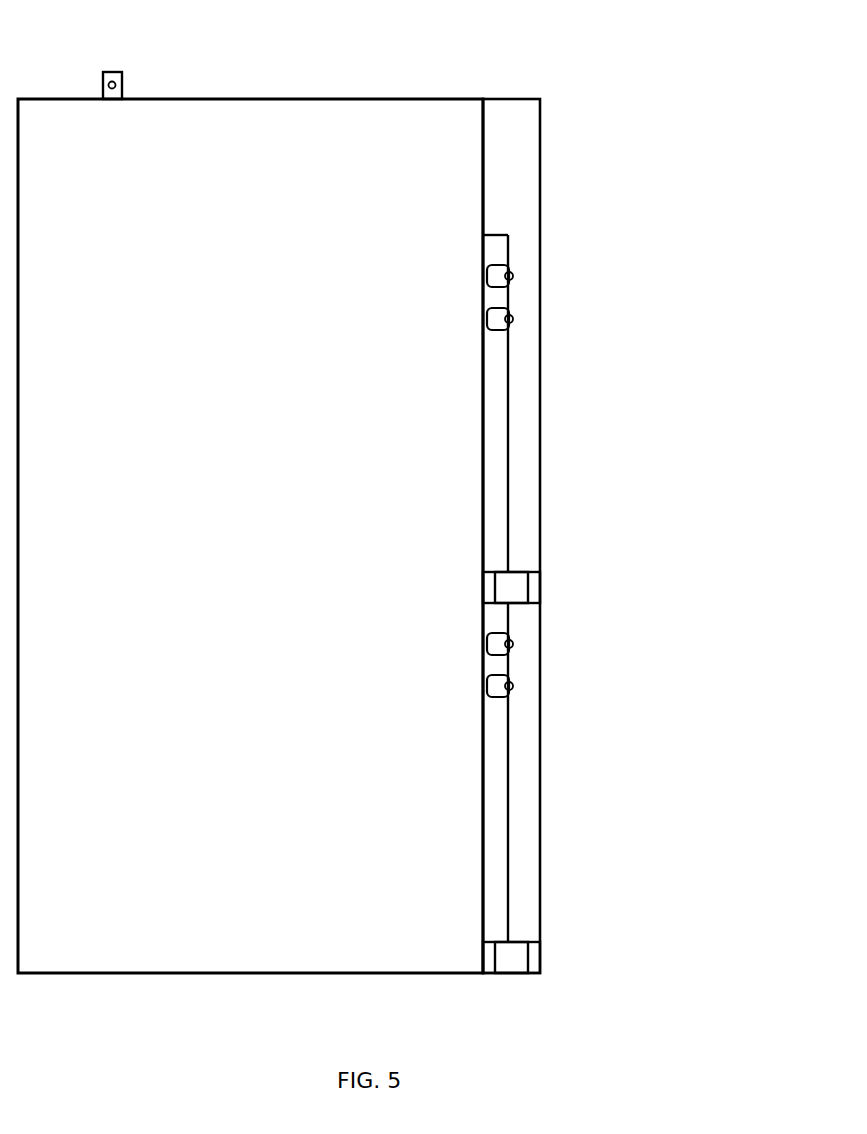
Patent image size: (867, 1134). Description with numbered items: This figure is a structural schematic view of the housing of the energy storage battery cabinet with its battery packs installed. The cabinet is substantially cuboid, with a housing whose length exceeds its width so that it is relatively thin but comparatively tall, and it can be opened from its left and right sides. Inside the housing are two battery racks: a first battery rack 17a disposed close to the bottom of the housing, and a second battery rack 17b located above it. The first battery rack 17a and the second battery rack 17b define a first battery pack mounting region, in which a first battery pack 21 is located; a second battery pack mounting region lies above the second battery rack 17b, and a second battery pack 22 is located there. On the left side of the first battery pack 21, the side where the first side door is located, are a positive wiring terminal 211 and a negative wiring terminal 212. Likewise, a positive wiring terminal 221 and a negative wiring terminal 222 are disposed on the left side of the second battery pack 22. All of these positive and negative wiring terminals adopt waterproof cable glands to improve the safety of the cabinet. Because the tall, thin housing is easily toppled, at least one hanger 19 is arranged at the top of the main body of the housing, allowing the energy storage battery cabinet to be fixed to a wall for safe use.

The hanger 19 is at (73, 49).
The second battery pack 22 is at (497, 440).
The negative wiring terminal 222 is at (513, 280).
The positive wiring terminal 221 is at (513, 320).
The second battery rack 17b is at (532, 592).
The negative wiring terminal 212 is at (513, 648).
The positive wiring terminal 211 is at (513, 688).
The first battery pack 21 is at (497, 856).
The first battery rack 17a is at (532, 963).